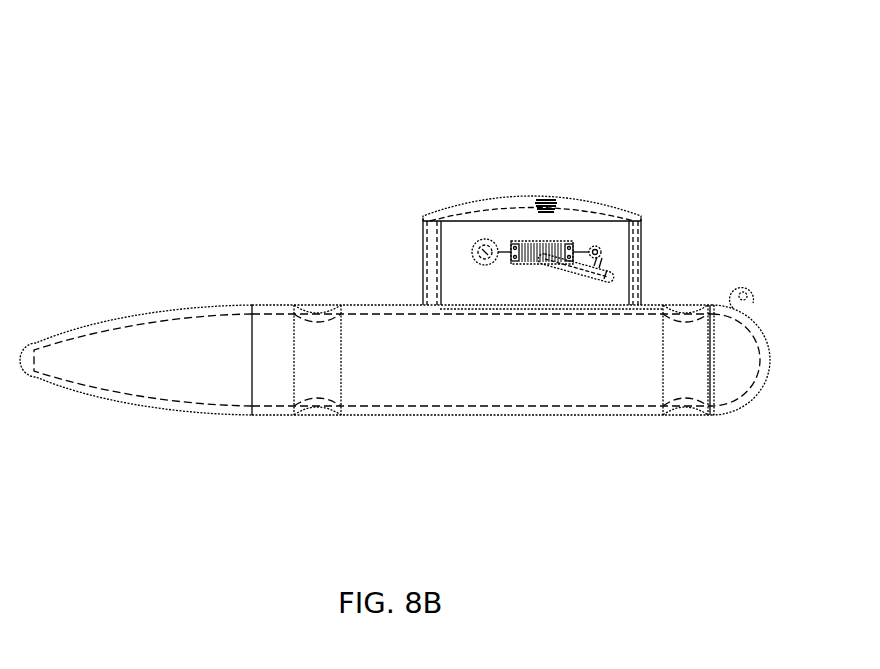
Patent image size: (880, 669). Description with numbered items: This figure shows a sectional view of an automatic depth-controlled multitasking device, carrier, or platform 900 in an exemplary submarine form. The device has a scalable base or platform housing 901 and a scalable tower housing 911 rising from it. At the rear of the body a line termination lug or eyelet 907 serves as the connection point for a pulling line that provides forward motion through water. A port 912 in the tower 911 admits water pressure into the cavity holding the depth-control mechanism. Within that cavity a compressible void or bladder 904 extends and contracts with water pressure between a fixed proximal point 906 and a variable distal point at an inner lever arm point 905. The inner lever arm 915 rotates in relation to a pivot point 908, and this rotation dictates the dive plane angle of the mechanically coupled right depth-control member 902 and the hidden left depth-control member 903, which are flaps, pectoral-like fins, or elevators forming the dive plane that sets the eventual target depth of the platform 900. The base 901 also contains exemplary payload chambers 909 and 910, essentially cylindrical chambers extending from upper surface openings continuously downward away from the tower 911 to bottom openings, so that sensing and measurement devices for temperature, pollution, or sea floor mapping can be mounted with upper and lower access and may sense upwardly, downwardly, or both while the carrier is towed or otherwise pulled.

The automatic depth-controlled multitasking device 900 is at (167, 187).
The platform housing 901 is at (392, 408).
The right depth-control member 902 is at (642, 262).
The left depth-control member 903 is at (615, 208).
The compressible void or bladder 904 is at (517, 240).
The inner lever arm point 905 is at (595, 246).
The fixed proximal point 906 is at (472, 250).
The line termination lug or eyelet 907 is at (749, 289).
The pivot point 908 is at (586, 272).
The payload chamber 909 is at (325, 305).
The payload chamber 910 is at (700, 305).
The tower housing 911 is at (470, 203).
The port 912 is at (546, 203).
The inner lever arm 915 is at (598, 263).